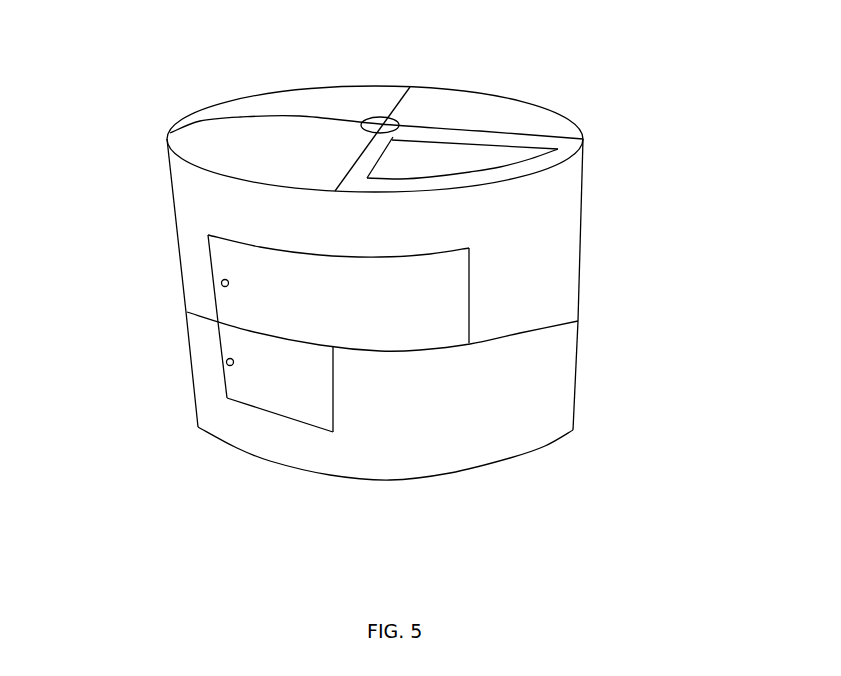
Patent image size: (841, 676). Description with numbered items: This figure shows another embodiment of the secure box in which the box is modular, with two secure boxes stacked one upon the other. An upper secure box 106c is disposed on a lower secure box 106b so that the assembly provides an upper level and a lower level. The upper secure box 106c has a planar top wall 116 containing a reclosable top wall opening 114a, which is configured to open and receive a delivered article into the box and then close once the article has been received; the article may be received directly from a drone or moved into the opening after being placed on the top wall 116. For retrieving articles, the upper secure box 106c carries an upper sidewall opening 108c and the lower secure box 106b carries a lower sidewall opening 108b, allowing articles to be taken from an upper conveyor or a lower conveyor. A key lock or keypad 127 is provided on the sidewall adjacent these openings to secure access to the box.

The top wall 116 is at (212, 147).
The reclosable top wall opening 114a is at (445, 157).
The upper secure box 106c is at (552, 237).
The lower secure box 106b is at (557, 372).
The upper sidewall opening 108c is at (233, 257).
The lower sidewall opening 108b is at (280, 397).
The key lock or keypad 127 is at (228, 366).